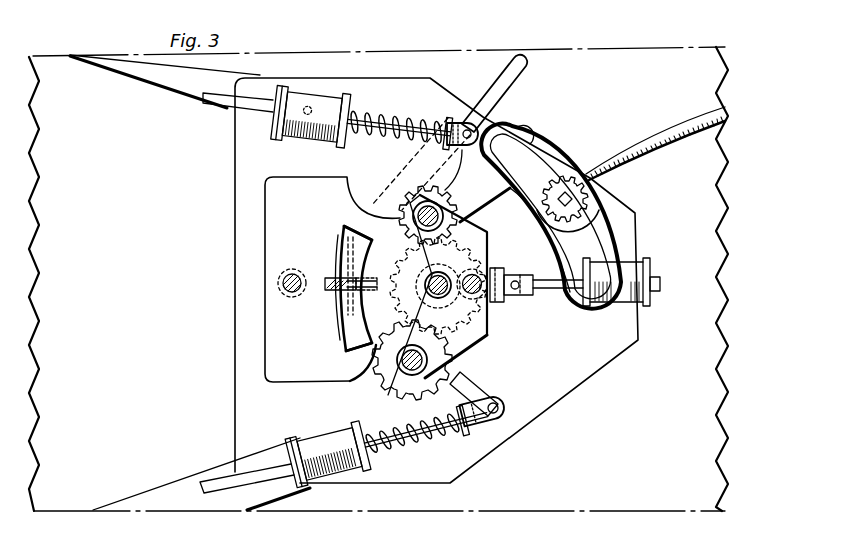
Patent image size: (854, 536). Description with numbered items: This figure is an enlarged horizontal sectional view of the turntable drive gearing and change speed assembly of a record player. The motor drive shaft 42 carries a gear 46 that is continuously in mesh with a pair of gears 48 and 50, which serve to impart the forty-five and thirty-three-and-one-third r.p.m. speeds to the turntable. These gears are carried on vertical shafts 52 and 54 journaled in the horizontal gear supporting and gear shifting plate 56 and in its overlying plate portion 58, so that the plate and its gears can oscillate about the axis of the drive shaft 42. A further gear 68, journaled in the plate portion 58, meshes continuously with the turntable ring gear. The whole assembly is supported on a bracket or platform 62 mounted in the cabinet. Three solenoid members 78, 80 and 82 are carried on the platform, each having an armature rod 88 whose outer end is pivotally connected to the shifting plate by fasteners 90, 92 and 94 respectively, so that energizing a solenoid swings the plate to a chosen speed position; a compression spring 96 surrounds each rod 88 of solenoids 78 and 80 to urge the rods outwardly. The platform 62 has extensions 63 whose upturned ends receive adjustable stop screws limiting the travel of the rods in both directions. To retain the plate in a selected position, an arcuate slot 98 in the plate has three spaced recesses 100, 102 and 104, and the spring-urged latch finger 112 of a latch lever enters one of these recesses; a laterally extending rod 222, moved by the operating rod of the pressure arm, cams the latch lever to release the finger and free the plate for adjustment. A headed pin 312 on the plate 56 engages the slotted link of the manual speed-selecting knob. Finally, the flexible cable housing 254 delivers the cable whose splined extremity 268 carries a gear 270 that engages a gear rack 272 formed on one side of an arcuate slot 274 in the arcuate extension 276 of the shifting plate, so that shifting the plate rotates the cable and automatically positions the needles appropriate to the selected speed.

The drive shaft 42 is at (439, 296).
The gear 46 is at (405, 302).
The gear 48 is at (447, 200).
The gear 50 is at (387, 381).
The vertical shaft 52 is at (418, 205).
The vertical shaft 54 is at (417, 373).
The gear supporting and gear shifting plate 56 is at (278, 290).
The overlying plate portion 58 is at (484, 344).
The bracket or platform 62 is at (252, 398).
The extensions 63 is at (176, 72).
The gear 68 is at (463, 303).
The solenoid member 78 is at (302, 98).
The solenoid member 80 is at (347, 475).
The solenoid member 82 is at (634, 270).
The rod 88 is at (393, 122).
The fastener 90 is at (480, 120).
The fastener 92 is at (500, 408).
The fastener 94 is at (516, 281).
The compression spring 96 is at (373, 107).
The arcuate slot 98 is at (347, 318).
The recess 100 is at (358, 224).
The recess 102 is at (345, 268).
The recess 104 is at (352, 348).
The latch finger 112 is at (332, 292).
The rod 222 is at (507, 70).
The flexible housing 254 is at (663, 128).
The splined extremity 268 is at (572, 192).
The gear 270 is at (564, 176).
The gear rack 272 is at (568, 230).
The arcuate slot 274 is at (528, 137).
The arcuate extension 276 is at (611, 207).
The headed pin 312 is at (278, 284).